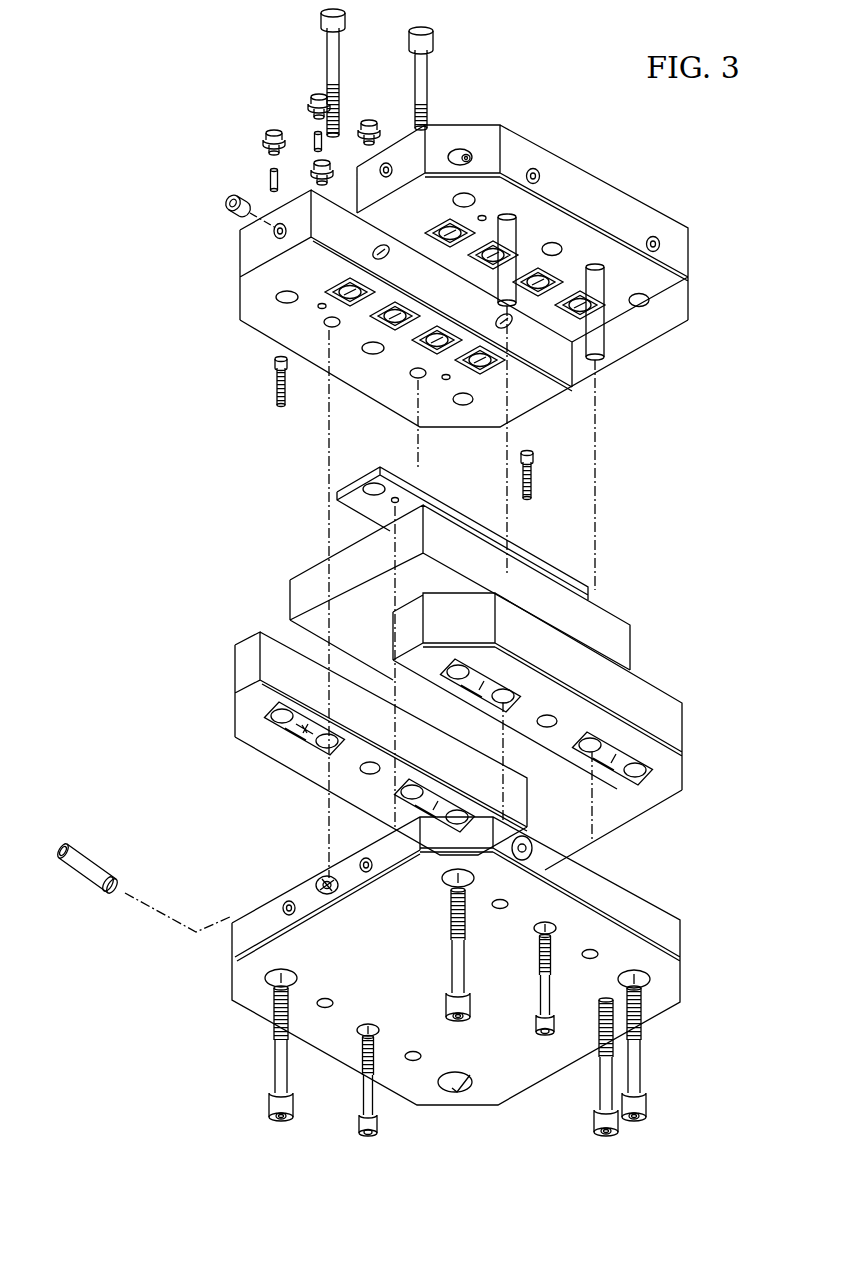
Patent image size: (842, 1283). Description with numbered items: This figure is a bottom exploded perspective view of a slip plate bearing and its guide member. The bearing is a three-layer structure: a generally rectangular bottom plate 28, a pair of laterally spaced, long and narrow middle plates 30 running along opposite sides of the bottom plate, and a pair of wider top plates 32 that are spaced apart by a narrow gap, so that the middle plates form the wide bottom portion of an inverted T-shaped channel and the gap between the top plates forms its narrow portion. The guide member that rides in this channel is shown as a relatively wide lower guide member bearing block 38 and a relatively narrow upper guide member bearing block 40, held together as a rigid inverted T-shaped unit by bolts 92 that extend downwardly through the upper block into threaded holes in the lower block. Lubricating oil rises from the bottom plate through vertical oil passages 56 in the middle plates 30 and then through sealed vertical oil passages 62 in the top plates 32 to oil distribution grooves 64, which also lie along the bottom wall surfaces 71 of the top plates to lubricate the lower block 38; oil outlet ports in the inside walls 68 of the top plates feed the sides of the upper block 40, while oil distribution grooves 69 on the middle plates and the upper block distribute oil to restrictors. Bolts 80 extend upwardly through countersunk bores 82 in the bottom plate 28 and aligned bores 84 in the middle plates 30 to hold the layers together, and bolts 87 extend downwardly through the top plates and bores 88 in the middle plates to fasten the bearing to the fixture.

The bottom plate 28 is at (685, 976).
The middle plates 30 is at (236, 714).
The top plates 32 is at (240, 302).
The lower guide member bearing block 38 is at (632, 647).
The upper guide member bearing block 40 is at (594, 582).
The vertical oil passages 56 is at (455, 680).
The sealed vertical oil passages 62 is at (487, 214).
The oil distribution grooves 64 is at (540, 284).
The inside walls 68 is at (560, 360).
The oil distribution grooves 69 is at (293, 741).
The bottom wall surfaces 71 is at (640, 325).
The bolts 80 is at (451, 961).
The countersunk bores 82 is at (266, 980).
The bores 84 is at (275, 722).
The bolts 87 is at (345, 18).
The bores 88 is at (322, 742).
The bolts 92 is at (275, 364).